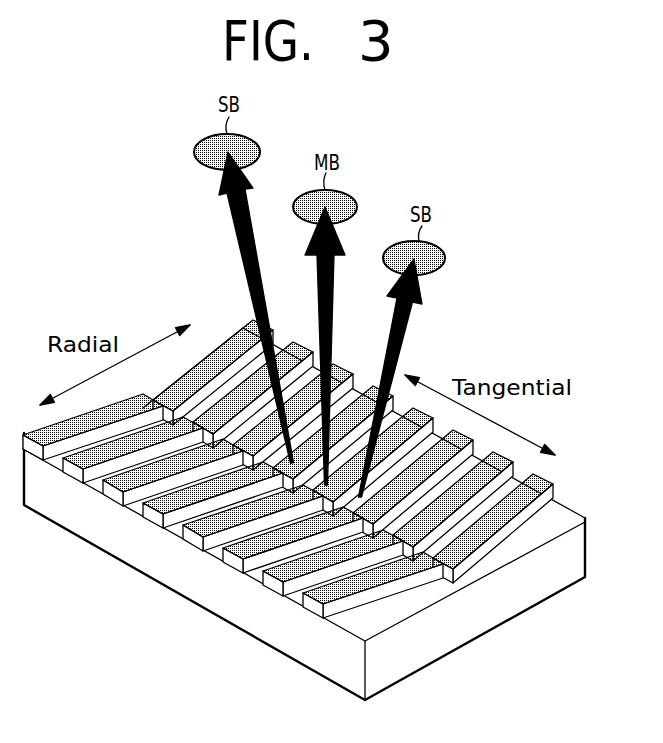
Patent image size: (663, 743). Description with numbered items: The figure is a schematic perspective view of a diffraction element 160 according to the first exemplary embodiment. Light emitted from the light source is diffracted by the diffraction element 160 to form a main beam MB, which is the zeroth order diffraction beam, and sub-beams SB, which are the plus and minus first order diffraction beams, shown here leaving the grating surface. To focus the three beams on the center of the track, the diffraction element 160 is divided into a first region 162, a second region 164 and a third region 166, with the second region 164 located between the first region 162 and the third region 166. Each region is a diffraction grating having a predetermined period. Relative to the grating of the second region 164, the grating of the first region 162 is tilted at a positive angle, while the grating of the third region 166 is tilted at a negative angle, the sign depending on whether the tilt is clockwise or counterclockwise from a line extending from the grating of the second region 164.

The diffraction element 160 is at (603, 607).
The first region 162 is at (431, 613).
The second region 164 is at (495, 575).
The third region 166 is at (558, 544).